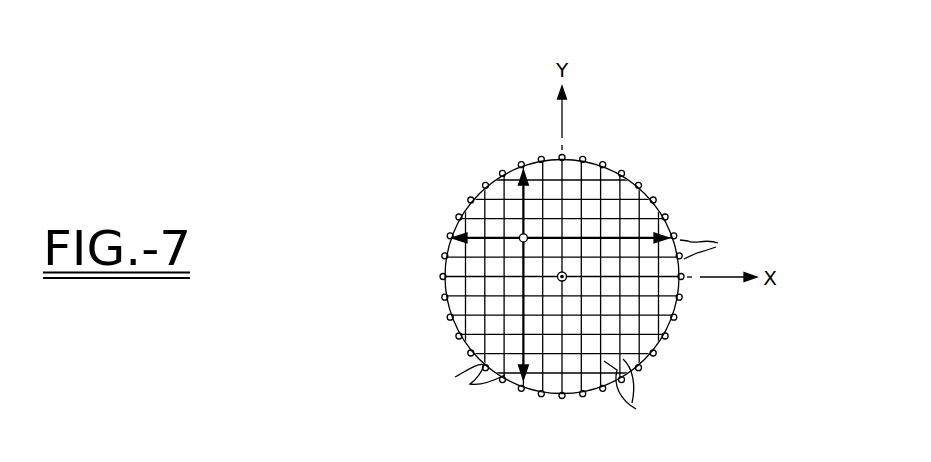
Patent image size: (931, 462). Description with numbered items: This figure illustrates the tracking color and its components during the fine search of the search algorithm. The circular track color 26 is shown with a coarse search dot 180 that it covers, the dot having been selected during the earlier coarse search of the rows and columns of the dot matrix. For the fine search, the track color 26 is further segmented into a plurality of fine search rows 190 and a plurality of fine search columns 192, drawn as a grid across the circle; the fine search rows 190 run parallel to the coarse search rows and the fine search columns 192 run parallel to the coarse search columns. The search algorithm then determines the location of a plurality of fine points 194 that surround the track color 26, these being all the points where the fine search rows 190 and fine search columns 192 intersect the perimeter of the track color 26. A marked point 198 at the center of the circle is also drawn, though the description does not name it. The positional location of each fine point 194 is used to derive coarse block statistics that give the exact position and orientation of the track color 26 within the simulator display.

The track color 26 is at (612, 171).
The course search dot 180 is at (520, 235).
The fine search rows 190 is at (472, 316).
The fine search columns 192 is at (643, 394).
The fine points 194 is at (588, 310).
The center origin point 198 is at (564, 279).